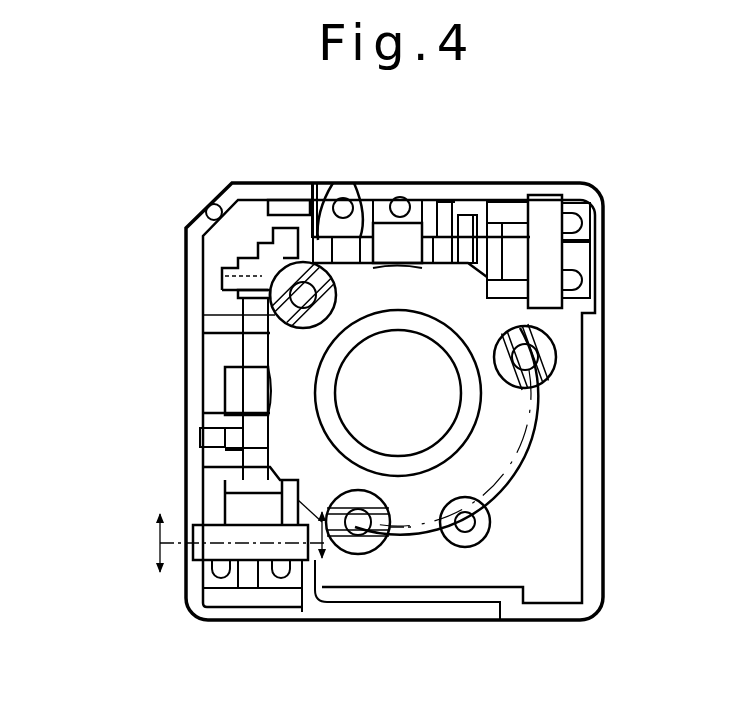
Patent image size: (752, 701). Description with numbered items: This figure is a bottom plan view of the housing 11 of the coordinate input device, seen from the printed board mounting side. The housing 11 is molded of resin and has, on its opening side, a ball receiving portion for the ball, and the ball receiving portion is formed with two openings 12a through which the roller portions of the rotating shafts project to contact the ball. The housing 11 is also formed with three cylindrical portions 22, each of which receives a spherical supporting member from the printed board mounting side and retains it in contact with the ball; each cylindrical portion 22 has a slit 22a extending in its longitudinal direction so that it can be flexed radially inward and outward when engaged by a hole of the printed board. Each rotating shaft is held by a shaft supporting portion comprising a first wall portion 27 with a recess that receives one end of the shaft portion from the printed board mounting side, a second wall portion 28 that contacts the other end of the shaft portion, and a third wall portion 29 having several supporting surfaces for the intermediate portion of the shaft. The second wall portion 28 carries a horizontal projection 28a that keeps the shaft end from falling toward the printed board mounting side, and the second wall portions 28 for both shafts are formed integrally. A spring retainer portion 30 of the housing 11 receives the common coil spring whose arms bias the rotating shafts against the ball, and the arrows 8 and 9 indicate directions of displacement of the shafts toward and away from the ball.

The direction of movement 8 is at (239, 510).
The direction of movement 9 is at (241, 571).
The housing 11 is at (545, 186).
The opening 12a is at (413, 243).
The cylindrical portion 22 is at (560, 352).
The slit 22a is at (550, 392).
The first wall portion 27 is at (576, 252).
The second wall portion 28 is at (290, 252).
The horizontal projection 28a is at (318, 242).
The third wall portion 29 is at (352, 247).
The spring retainer portion 30 is at (210, 205).